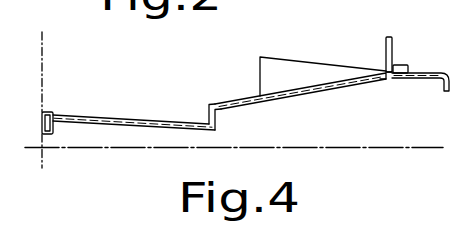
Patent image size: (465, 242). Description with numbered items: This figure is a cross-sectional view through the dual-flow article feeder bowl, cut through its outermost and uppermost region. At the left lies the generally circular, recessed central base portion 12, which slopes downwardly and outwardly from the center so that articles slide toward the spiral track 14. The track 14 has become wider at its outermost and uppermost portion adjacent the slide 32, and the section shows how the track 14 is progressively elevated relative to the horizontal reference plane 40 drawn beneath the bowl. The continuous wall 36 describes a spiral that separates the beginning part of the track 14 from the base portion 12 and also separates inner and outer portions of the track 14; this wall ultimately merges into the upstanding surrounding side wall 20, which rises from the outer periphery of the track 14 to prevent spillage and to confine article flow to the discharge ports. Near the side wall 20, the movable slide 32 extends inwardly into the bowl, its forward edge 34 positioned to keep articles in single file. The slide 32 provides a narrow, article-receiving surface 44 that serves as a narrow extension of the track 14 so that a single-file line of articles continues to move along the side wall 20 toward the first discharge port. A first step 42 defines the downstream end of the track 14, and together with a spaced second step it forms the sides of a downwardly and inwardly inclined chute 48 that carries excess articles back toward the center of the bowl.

The central base portion 12 is at (133, 118).
The spiral track 14 is at (287, 57).
The side wall 20 is at (393, 47).
The slide 32 is at (425, 69).
The forward edge 34 is at (385, 71).
The continuous wall 36 is at (264, 87).
The horizontal reference plane 40 is at (306, 148).
The first step 42 is at (275, 83).
The article-receiving surface 44 is at (384, 68).
The chute 48 is at (342, 86).